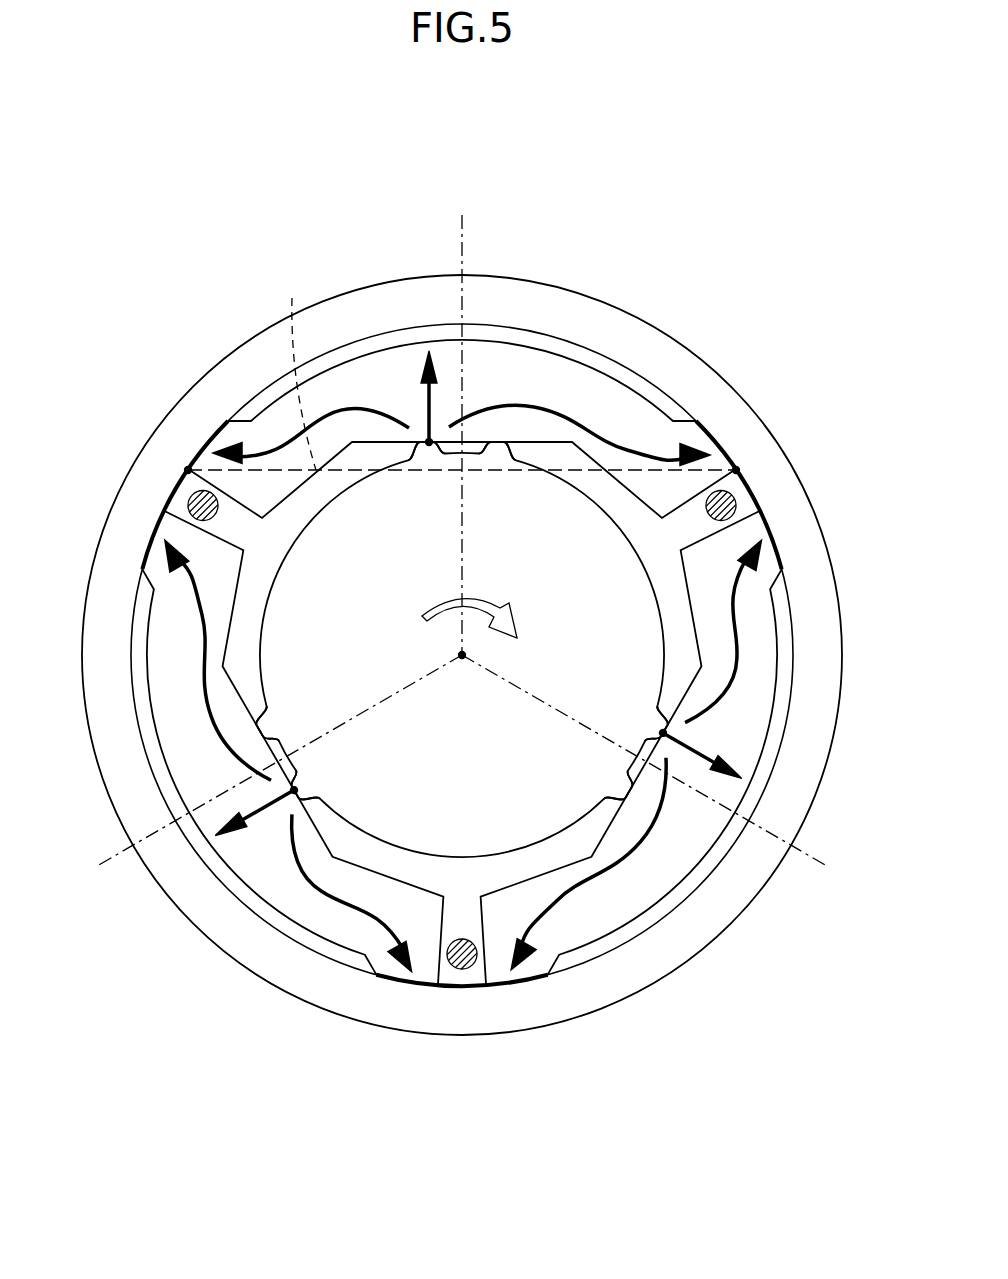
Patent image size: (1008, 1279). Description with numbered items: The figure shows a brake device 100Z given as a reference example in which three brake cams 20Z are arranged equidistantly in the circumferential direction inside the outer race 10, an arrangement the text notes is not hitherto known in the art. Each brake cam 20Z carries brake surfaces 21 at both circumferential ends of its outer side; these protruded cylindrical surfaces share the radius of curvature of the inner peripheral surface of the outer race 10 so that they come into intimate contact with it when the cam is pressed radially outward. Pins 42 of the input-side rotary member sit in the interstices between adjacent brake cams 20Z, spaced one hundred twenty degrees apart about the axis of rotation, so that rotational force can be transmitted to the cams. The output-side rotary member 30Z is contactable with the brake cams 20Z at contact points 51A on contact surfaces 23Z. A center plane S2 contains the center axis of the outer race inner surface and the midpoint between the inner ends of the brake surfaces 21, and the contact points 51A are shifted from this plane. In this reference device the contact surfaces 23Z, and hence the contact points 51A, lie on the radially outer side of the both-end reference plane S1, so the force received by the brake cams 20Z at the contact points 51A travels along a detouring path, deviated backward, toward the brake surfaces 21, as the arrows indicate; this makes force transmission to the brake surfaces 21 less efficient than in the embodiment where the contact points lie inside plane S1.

The brake device 100Z is at (753, 249).
The outer race 10 is at (703, 351).
The brake cam 20Z is at (572, 355).
The brake surface 21 is at (211, 438).
The pin 42 is at (177, 495).
The output-side rotary member 30Z is at (664, 614).
The contact surface 23Z is at (513, 462).
The contact point 51A is at (428, 440).
The both-end reference plane S1 is at (290, 369).
The center plane S2 is at (470, 212).